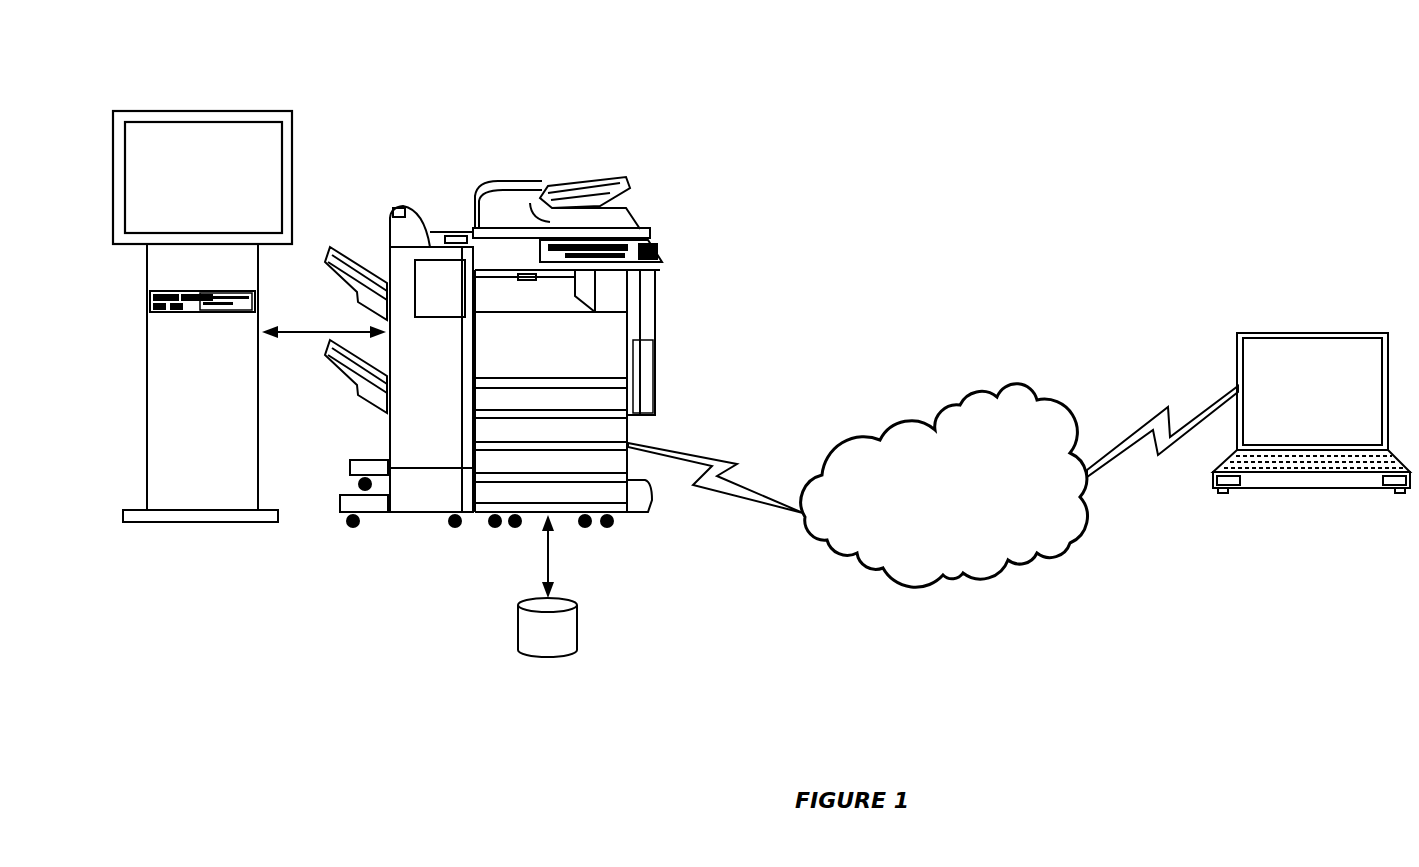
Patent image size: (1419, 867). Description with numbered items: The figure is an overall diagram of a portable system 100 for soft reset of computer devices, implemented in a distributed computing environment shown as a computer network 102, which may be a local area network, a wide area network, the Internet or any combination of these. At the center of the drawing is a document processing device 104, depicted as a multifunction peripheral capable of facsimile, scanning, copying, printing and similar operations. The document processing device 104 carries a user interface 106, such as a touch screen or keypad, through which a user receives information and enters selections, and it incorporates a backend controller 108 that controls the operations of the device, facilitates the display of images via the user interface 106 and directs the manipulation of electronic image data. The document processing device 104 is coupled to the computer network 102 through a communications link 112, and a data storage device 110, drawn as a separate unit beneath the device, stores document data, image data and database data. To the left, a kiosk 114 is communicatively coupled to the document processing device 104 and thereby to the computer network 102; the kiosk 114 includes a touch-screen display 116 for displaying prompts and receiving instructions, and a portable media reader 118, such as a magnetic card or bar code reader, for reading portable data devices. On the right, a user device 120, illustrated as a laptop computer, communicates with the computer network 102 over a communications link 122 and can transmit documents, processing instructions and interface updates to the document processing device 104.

The portable system 100 is at (1266, 160).
The computer network 102 is at (1010, 380).
The document processing device 104 is at (555, 187).
The user interface 106 is at (663, 256).
The controller 108 is at (620, 368).
The data storage device 110 is at (578, 611).
The communications link 112 is at (720, 462).
The kiosk 114 is at (187, 100).
The display 116 is at (264, 207).
The portable media reader 118 is at (248, 288).
The user device 120 is at (1331, 333).
The communications link 122 is at (1160, 455).